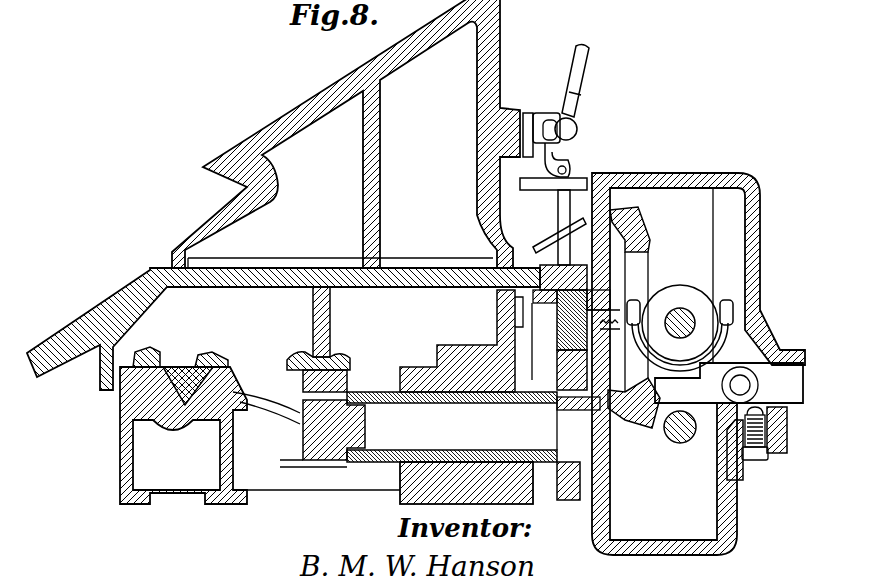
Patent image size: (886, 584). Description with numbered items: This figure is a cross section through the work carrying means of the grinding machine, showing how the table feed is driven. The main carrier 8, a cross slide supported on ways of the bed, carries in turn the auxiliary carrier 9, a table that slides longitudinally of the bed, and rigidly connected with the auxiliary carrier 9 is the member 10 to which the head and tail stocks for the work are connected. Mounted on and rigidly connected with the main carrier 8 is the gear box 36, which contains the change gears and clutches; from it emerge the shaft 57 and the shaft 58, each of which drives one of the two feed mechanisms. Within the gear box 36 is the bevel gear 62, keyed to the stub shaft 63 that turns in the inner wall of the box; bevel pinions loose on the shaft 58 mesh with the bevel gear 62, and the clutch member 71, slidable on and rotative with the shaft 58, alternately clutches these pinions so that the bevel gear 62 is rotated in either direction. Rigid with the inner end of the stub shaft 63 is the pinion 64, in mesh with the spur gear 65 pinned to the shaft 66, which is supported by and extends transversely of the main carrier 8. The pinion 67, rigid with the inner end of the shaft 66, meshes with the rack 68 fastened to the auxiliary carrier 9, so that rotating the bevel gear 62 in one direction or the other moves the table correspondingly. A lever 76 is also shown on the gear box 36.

The main carrier 8 is at (120, 450).
The auxiliary carrier 9 is at (246, 285).
The member 10 is at (302, 97).
The gear box 36 is at (690, 0).
The shaft 57 is at (681, 443).
The shaft 58 is at (687, 310).
The bevel gear 62 is at (643, 255).
The stub shaft 63 is at (587, 360).
The pinion 64 is at (565, 337).
The spur gear 65 is at (583, 511).
The shaft 66 is at (395, 437).
The pinion 67 is at (325, 468).
The rack 68 is at (340, 378).
The clutch member 71 is at (664, 292).
The lever 76 is at (543, 112).